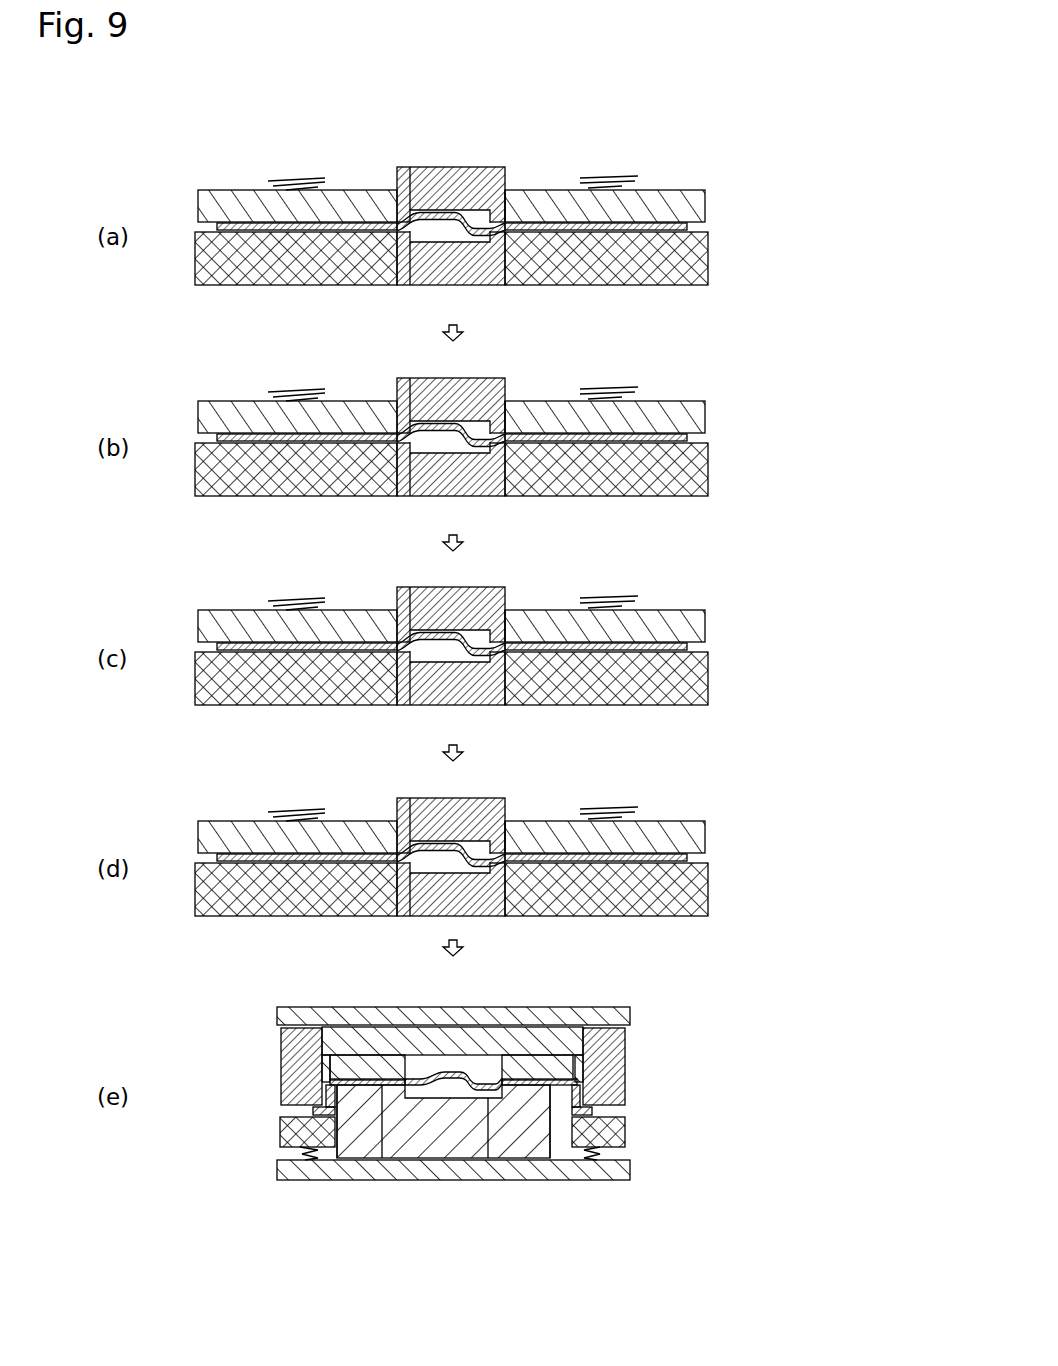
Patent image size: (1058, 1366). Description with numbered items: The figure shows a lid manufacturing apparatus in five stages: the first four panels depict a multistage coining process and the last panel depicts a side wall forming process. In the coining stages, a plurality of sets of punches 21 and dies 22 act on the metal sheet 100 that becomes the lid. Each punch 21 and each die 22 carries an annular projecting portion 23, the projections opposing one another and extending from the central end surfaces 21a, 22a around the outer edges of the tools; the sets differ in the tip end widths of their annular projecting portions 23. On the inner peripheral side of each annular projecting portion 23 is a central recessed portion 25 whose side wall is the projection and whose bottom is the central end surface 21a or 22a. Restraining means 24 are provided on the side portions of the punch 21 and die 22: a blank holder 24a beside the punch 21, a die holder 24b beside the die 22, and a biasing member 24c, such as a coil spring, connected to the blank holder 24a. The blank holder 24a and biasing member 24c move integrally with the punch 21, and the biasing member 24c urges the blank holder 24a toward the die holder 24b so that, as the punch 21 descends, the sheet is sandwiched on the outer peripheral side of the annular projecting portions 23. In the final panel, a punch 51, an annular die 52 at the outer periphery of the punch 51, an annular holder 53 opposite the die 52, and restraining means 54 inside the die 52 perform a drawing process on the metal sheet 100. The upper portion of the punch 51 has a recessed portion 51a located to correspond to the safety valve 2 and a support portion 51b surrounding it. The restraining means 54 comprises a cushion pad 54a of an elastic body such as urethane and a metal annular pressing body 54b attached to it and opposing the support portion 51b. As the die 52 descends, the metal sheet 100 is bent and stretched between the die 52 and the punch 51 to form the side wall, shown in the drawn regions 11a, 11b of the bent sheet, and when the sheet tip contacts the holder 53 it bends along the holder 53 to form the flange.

The safety valve 2 is at (398, 1080).
The upper mold member 11a is at (580, 1094).
The lower mold member 11b is at (592, 1111).
The punch 21 is at (471, 463).
The central end surface 21a is at (417, 170).
The die 22 is at (486, 593).
The central end surface 22a is at (458, 242).
The annular projecting portion 23 is at (398, 208).
The restraining means 24 is at (470, 494).
The blank holder 24a is at (365, 200).
The die holder 24b is at (708, 259).
The biasing member 24c is at (285, 180).
The central recessed portion 25 is at (506, 208).
The punch 51 is at (453, 1163).
The recessed portion 51a is at (487, 1160).
The support portion 51b is at (382, 1158).
The annular die 52 is at (281, 1045).
The annular holder 53 is at (280, 1132).
The restraining means 54 is at (483, 1027).
The cushion pad 54a is at (448, 1072).
The annular pressing body 54b is at (360, 1028).
The metal sheet 100 is at (569, 223).